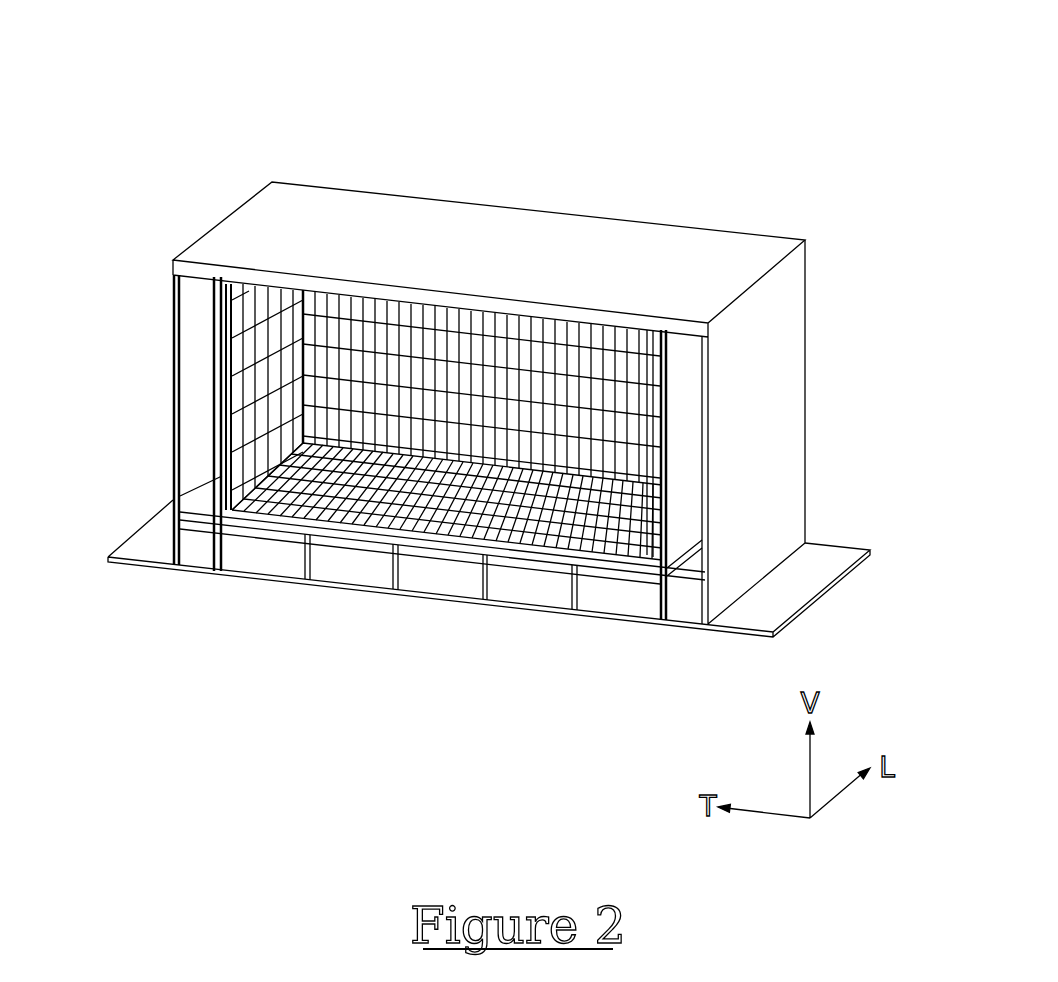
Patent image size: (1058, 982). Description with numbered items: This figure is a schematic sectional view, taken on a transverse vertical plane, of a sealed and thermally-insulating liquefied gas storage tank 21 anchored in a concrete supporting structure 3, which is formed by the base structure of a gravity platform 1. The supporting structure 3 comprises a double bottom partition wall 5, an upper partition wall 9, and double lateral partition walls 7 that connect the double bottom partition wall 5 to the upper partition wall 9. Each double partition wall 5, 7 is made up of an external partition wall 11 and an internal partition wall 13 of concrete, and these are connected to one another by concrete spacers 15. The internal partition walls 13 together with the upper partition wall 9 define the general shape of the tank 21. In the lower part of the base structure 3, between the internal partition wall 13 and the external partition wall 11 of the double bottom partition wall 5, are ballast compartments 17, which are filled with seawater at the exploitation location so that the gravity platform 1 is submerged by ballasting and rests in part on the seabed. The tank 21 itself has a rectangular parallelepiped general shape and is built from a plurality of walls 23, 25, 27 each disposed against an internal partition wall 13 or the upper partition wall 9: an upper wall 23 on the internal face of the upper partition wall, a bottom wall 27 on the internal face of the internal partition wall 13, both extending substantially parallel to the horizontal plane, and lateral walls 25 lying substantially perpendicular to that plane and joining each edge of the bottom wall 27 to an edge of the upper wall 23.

The gravity platform 1 is at (155, 90).
The supporting structure 3 is at (118, 386).
The double bottom partition wall 5 is at (424, 601).
The double lateral partition walls 7 is at (162, 453).
The upper partition wall 9 is at (575, 255).
The external partition wall 11 is at (172, 290).
The internal partition wall 13 is at (215, 400).
The concrete spacers 15 is at (190, 492).
The ballast compartments 17 is at (205, 585).
The liquefied gas storage tank 21 is at (445, 410).
The upper wall 23 is at (330, 286).
The lateral walls 25 is at (600, 380).
The bottom wall 27 is at (365, 562).